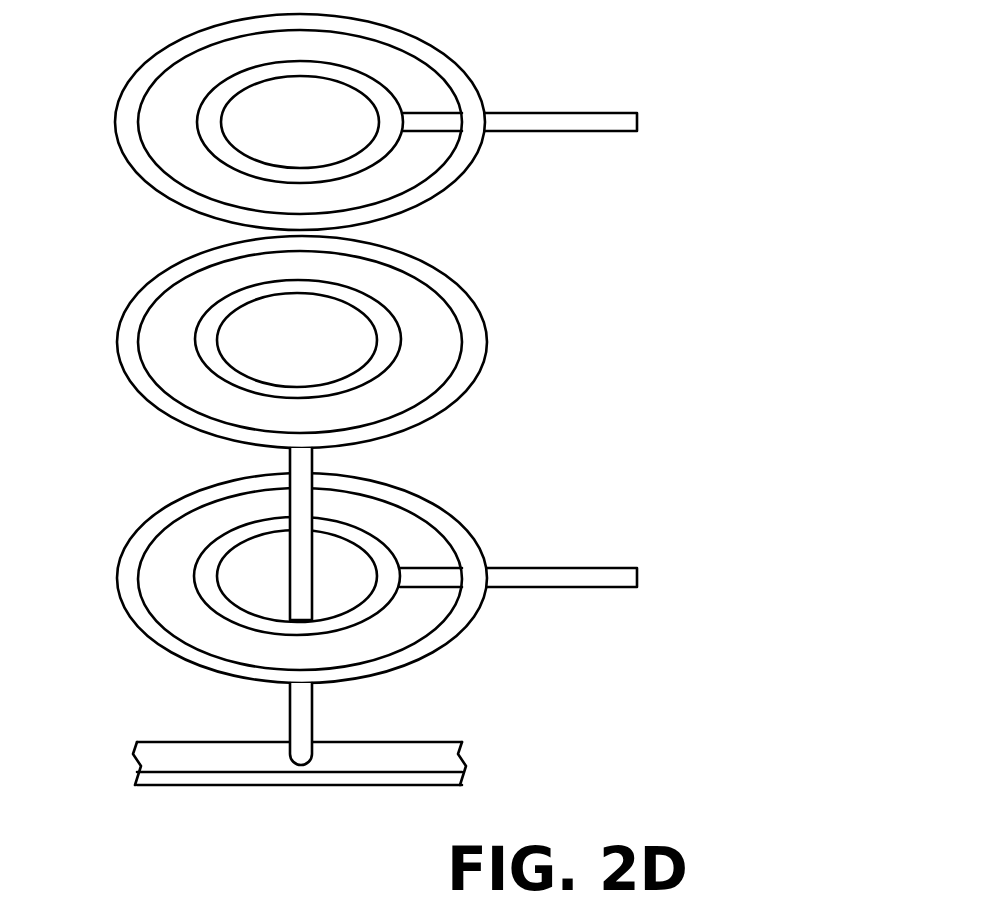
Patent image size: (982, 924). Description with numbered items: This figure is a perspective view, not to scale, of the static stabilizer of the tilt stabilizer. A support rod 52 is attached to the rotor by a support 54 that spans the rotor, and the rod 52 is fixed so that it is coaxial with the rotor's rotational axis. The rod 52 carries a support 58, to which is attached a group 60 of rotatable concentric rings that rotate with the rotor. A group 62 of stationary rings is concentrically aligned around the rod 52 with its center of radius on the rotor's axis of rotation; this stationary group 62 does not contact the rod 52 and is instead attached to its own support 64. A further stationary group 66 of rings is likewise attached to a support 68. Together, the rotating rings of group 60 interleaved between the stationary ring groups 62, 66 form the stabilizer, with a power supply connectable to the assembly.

The support rod 52 is at (288, 718).
The support 54 is at (410, 758).
The support 58 is at (436, 340).
The group of rotatable concentric rings 60 is at (145, 395).
The group of stationary rings 62 is at (140, 632).
The support 64 is at (563, 567).
The stationary group 66 is at (128, 162).
The support 68 is at (588, 114).